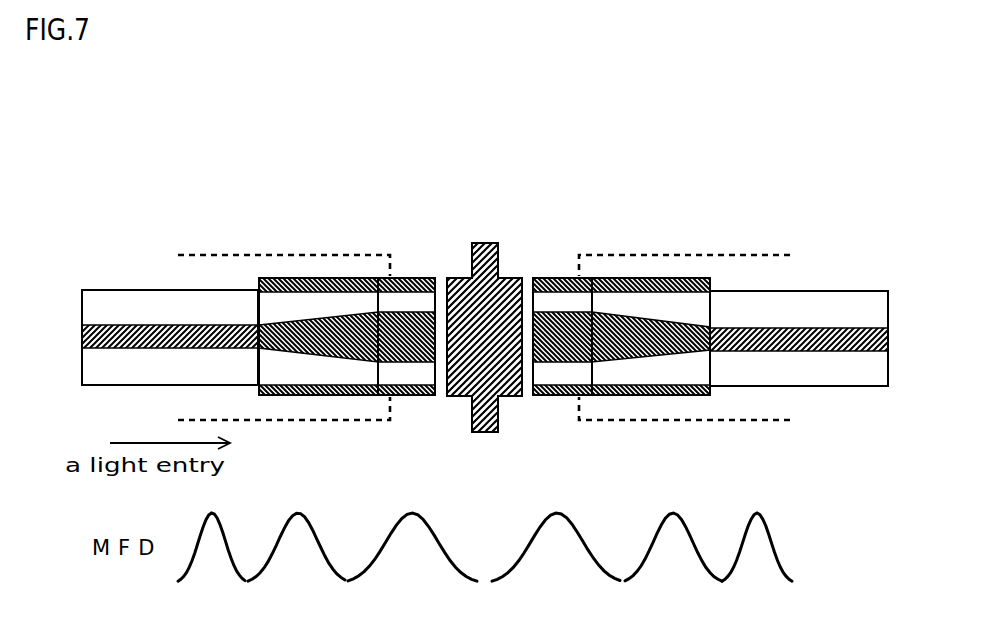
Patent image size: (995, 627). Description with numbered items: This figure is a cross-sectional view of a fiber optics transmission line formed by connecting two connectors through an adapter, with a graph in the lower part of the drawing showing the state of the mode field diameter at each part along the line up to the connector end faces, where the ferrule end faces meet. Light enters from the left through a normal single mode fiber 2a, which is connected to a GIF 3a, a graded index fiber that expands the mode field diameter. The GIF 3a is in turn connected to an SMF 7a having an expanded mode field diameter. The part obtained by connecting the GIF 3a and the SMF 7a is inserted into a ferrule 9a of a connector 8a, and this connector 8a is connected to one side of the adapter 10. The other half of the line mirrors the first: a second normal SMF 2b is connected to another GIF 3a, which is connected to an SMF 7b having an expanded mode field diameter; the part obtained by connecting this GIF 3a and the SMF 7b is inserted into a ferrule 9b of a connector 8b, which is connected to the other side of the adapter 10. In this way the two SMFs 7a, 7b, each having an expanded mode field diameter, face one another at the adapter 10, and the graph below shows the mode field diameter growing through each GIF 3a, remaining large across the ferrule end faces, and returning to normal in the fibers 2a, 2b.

The normal SMF 2a is at (150, 312).
The normal SMF 2b is at (808, 306).
The GIF 3a is at (308, 307).
The SMF having an expanded MFD 7a is at (412, 304).
The SMF having an expanded MFD 7b is at (552, 304).
The connector 8a is at (258, 254).
The connector 8b is at (715, 256).
The ferrule 9a is at (377, 278).
The ferrule 9b is at (593, 278).
The adapter 10 is at (488, 243).